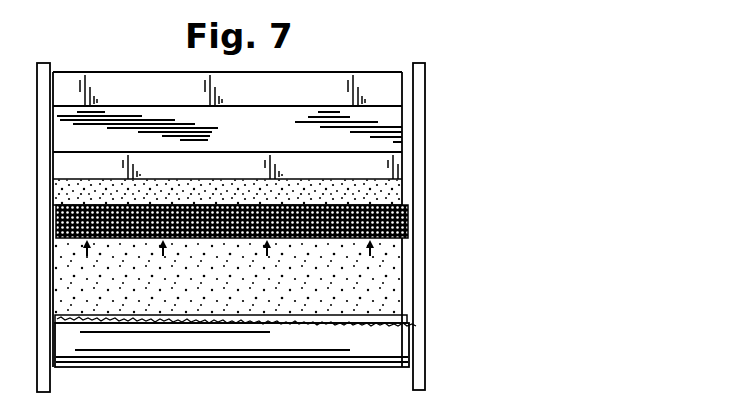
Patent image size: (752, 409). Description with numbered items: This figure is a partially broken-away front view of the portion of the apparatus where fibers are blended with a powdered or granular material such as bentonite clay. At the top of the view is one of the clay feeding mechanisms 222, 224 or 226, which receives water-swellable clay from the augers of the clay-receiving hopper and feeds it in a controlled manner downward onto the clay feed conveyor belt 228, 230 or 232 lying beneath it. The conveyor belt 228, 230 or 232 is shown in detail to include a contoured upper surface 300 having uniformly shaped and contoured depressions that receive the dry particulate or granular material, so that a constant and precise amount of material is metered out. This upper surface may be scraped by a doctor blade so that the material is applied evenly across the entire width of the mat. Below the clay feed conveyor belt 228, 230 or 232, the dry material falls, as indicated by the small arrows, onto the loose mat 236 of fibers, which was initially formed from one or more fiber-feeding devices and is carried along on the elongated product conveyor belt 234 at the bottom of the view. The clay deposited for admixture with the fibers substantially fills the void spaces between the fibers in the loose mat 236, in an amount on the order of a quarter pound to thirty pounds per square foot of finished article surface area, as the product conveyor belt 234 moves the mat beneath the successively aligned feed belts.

The clay feeding mechanism 222 is at (350, 127).
The clay feeding mechanism 224 is at (350, 127).
The clay feeding mechanism 226 is at (402, 125).
The contoured upper surface 300 is at (407, 214).
The clay feed conveyor belt 228 is at (351, 274).
The clay feed conveyor belt 230 is at (351, 274).
The clay feed conveyor belt 232 is at (380, 258).
The loose mat 236 is at (397, 317).
The product conveyor belt 234 is at (400, 346).